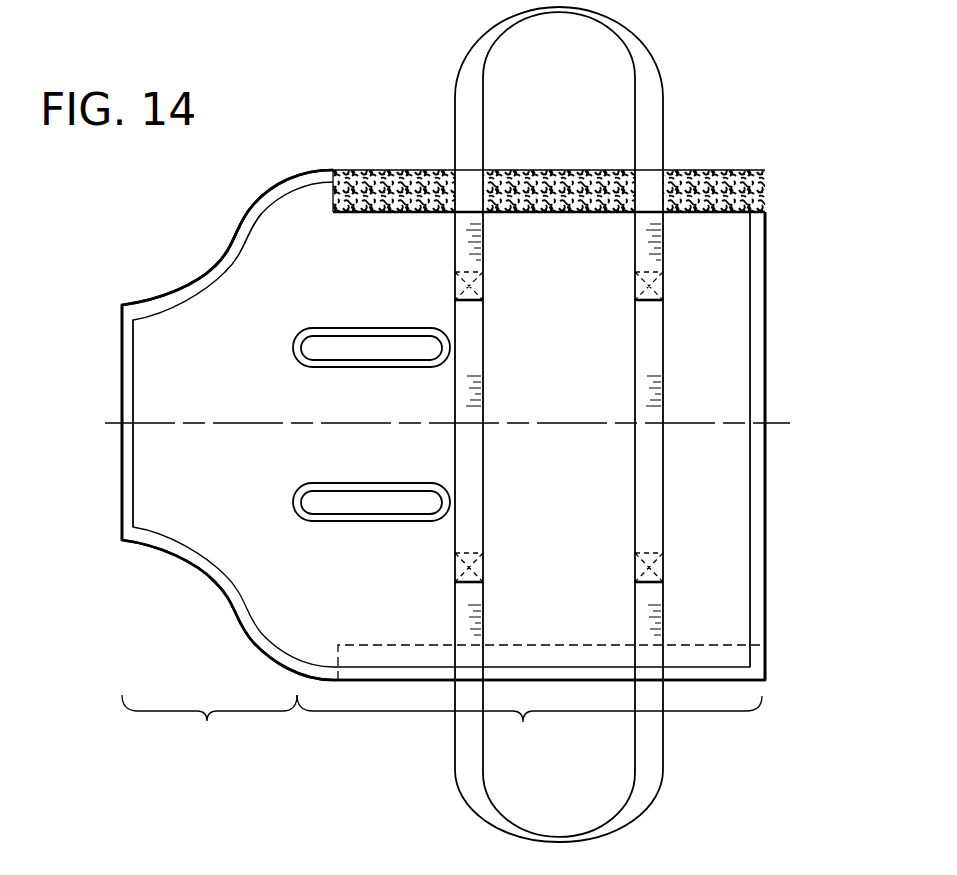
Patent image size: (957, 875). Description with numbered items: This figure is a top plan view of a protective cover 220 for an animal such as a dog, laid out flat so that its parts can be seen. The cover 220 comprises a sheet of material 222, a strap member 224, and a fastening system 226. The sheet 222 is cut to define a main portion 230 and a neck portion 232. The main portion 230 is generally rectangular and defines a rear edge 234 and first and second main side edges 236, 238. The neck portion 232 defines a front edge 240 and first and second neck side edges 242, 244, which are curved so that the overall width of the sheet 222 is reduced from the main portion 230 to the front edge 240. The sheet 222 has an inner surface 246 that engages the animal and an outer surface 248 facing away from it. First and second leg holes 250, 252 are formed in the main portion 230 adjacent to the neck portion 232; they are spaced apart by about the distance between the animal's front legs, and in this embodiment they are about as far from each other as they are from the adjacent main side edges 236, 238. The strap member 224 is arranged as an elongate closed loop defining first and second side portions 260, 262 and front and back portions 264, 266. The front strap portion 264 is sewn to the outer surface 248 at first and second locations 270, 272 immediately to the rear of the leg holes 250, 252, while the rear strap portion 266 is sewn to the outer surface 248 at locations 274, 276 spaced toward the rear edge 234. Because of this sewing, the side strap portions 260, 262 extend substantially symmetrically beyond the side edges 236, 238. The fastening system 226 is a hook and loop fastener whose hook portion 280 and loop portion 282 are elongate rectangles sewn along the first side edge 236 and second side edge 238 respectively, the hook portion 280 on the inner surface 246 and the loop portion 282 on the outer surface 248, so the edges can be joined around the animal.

The protective cover 220 is at (722, 125).
The sheet of material 222 is at (180, 243).
The strap member 224 is at (672, 97).
The fastening system 226 is at (352, 160).
The main portion 230 is at (523, 722).
The neck portion 232 is at (207, 720).
The rear edge 234 is at (766, 352).
The first main side edge 236 is at (727, 686).
The second main side edge 238 is at (680, 170).
The front edge 240 is at (122, 455).
The first neck side edge 242 is at (167, 550).
The second neck side edge 244 is at (196, 280).
The inner surface 246 is at (257, 240).
The outer surface 248 is at (272, 220).
The first leg hole 250 is at (367, 500).
The second leg hole 252 is at (363, 343).
The first side strap portion 260 is at (672, 737).
The second side strap portion 262 is at (640, 32).
The front strap portion 264 is at (487, 342).
The rear strap portion 266 is at (633, 350).
The first sewing location 270 is at (488, 562).
The second sewing location 272 is at (488, 283).
The first rear sewing location 274 is at (632, 562).
The second rear sewing location 276 is at (632, 283).
The hook portion 280 is at (713, 655).
The loop portion 282 is at (507, 180).